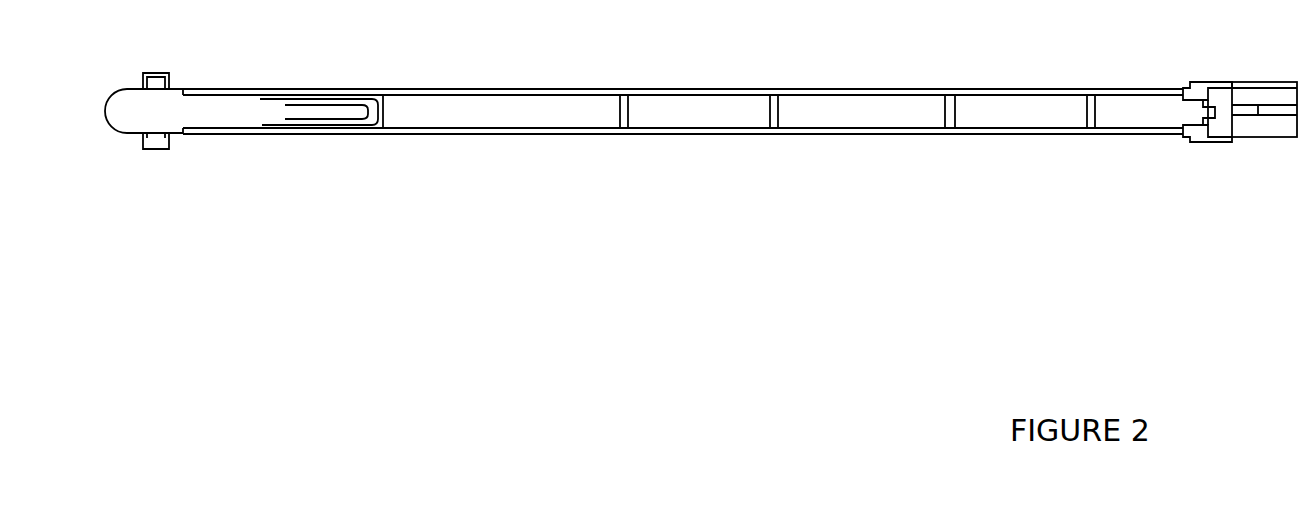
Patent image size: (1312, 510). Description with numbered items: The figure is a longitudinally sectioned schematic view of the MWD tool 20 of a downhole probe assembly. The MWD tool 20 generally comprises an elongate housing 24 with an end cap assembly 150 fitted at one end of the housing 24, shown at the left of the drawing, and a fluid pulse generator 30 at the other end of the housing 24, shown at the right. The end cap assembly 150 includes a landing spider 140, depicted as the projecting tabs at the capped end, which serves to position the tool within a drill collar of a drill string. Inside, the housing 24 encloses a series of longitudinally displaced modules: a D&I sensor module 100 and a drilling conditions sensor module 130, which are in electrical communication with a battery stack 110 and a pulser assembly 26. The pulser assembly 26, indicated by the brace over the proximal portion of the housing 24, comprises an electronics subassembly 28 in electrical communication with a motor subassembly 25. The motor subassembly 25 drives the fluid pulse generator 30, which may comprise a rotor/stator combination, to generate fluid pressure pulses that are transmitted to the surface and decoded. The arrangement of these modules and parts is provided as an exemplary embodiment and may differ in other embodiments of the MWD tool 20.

The MWD tool 20 is at (276, 217).
The housing 24 is at (583, 132).
The motor subassembly 25 is at (1127, 113).
The pulser assembly 26 is at (1178, 83).
The electronics subassembly 28 is at (1022, 117).
The fluid pulse generator 30 is at (1243, 83).
The D&I sensor module 100 is at (677, 108).
The battery stack 110 is at (470, 105).
The drilling conditions sensor module 130 is at (852, 112).
The landing spider 140 is at (157, 73).
The end cap assembly 150 is at (123, 117).